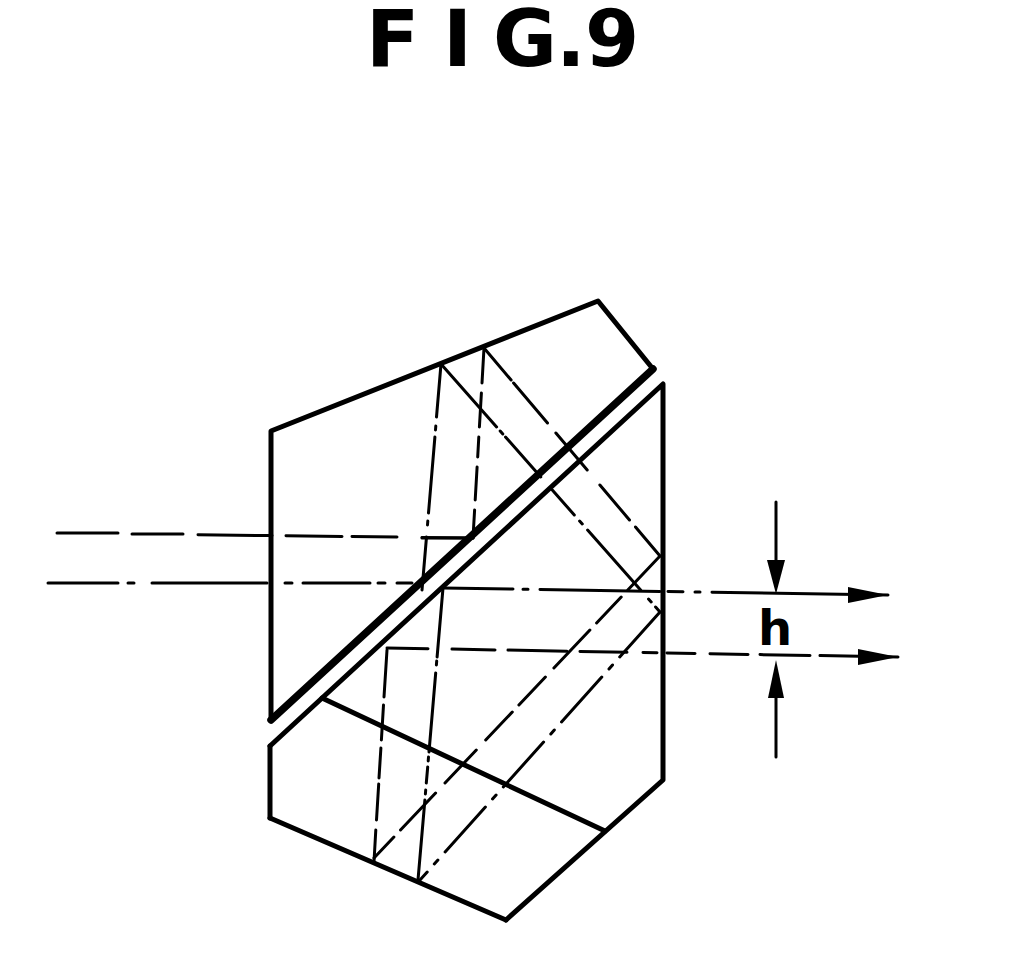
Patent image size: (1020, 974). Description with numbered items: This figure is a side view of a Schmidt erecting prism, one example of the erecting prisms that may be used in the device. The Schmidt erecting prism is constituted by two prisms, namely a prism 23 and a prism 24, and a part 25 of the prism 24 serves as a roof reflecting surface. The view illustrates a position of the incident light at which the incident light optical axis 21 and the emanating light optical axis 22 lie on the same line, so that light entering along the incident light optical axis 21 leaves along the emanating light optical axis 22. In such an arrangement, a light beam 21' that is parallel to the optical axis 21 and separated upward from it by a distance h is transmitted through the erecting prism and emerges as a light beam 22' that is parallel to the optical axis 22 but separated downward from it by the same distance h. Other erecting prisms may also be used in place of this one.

The incident light beam 21 is at (230, 637).
The second incident light beam 21' is at (265, 476).
The emergent light beam 22 is at (684, 545).
The second emergent light beam 22' is at (652, 708).
The first prism (upper prism / reflecting surface) 23 is at (549, 350).
The second prism (lower prism / exit surface) 24 is at (649, 747).
The bottom reflecting surface 25 is at (354, 886).